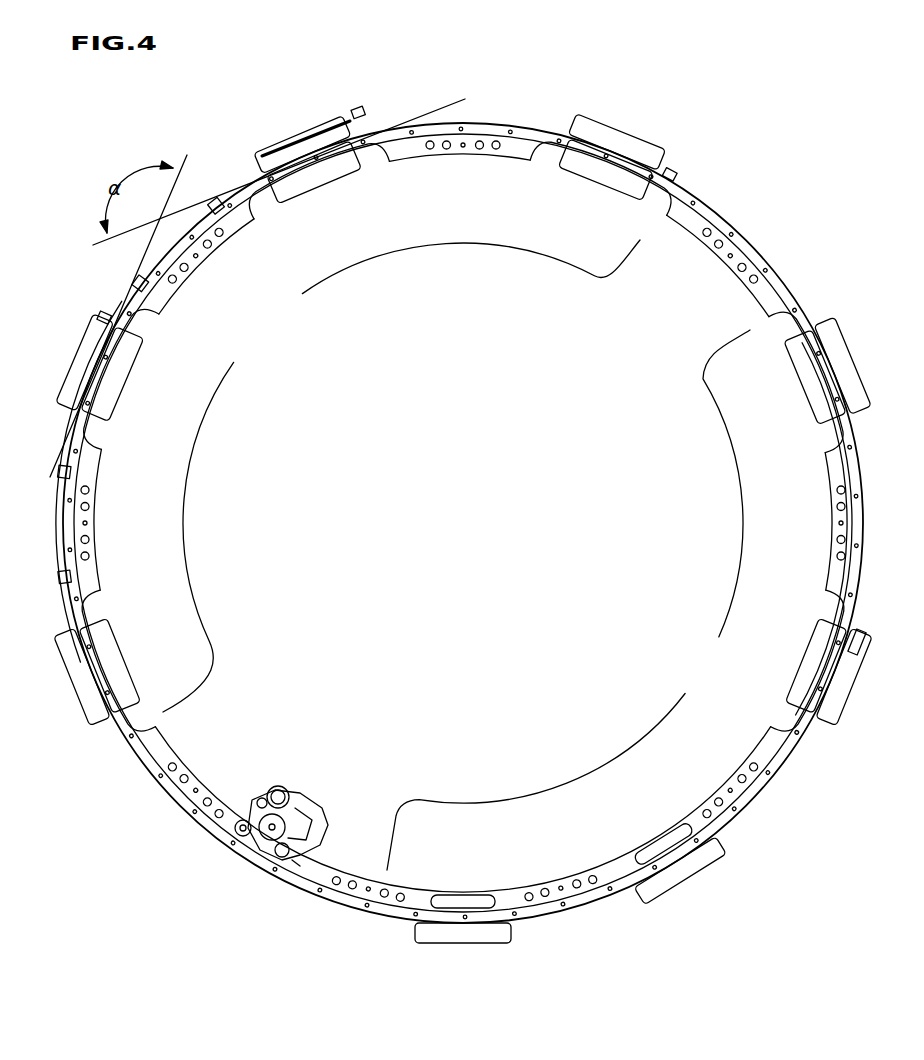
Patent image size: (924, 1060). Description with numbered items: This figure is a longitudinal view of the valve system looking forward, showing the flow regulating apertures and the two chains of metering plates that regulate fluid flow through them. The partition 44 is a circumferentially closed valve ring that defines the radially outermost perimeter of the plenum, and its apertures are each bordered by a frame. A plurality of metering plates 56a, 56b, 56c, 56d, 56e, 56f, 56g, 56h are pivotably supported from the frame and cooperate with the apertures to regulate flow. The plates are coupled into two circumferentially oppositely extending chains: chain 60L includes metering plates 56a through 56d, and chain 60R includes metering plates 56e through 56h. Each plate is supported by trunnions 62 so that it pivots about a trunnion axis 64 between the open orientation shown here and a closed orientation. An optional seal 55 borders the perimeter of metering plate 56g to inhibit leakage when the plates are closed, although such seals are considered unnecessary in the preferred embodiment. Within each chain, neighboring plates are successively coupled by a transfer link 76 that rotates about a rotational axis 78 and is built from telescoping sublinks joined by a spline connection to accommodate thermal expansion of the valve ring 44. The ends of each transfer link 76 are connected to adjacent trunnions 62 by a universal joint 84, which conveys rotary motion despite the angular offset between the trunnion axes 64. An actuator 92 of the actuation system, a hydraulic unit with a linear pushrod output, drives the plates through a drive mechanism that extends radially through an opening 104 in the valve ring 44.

The partition 44 is at (722, 216).
The seal 55 is at (852, 645).
The metering plate 56a is at (113, 662).
The metering plate 56b is at (122, 372).
The metering plate 56c is at (330, 178).
The metering plate 56d is at (595, 170).
The metering plate 56e is at (490, 938).
The metering plate 56f is at (702, 848).
The metering plate 56g is at (815, 730).
The metering plate 56h is at (832, 340).
The chain 60L is at (223, 511).
The chain 60R is at (715, 501).
The trunnion 62 is at (360, 112).
The trunnion axis 64 is at (463, 101).
The transfer link 76 is at (183, 257).
The rotational axis 78 is at (285, 135).
The universal joint 84 is at (237, 190).
The actuator 92 is at (312, 790).
The opening 104 is at (292, 860).